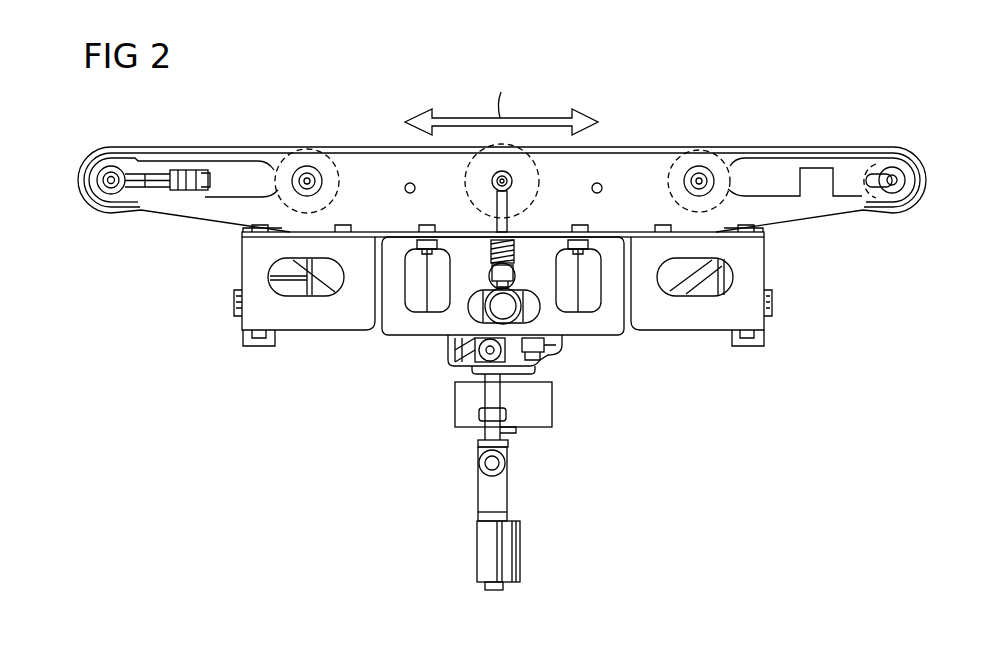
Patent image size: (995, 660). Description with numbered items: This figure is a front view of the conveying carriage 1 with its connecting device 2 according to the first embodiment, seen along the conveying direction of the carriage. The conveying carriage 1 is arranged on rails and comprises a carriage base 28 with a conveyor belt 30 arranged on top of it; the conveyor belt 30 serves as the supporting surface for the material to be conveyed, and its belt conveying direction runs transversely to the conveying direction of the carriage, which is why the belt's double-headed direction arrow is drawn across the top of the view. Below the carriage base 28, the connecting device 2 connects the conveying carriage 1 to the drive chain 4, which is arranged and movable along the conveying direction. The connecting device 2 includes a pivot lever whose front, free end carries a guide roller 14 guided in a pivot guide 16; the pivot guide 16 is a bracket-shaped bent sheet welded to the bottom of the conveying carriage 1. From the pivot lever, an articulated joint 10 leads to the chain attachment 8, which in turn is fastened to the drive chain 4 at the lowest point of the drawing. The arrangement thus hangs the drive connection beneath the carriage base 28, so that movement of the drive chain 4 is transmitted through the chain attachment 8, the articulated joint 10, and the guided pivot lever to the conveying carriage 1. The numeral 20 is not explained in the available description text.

The conveying carriage 1 is at (320, 99).
The connecting device 2 is at (440, 438).
The drive chain 4 is at (486, 556).
The chain attachment 8 is at (503, 490).
The articulated joint 10 is at (503, 436).
The guide roller 14 is at (480, 348).
The pivot guide 16 is at (530, 350).
The push rod 20 is at (490, 400).
The carriage base 28 is at (763, 320).
The conveyor belt 30 is at (814, 150).